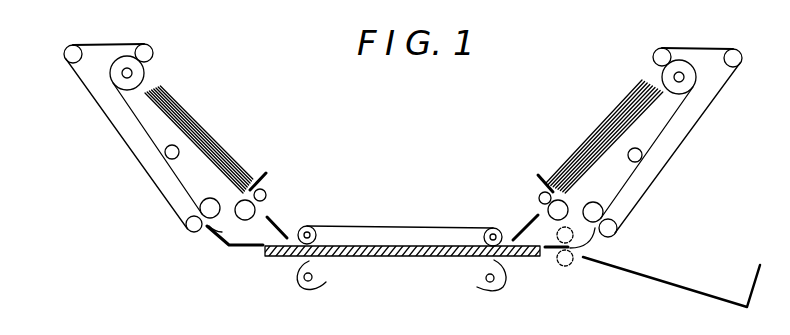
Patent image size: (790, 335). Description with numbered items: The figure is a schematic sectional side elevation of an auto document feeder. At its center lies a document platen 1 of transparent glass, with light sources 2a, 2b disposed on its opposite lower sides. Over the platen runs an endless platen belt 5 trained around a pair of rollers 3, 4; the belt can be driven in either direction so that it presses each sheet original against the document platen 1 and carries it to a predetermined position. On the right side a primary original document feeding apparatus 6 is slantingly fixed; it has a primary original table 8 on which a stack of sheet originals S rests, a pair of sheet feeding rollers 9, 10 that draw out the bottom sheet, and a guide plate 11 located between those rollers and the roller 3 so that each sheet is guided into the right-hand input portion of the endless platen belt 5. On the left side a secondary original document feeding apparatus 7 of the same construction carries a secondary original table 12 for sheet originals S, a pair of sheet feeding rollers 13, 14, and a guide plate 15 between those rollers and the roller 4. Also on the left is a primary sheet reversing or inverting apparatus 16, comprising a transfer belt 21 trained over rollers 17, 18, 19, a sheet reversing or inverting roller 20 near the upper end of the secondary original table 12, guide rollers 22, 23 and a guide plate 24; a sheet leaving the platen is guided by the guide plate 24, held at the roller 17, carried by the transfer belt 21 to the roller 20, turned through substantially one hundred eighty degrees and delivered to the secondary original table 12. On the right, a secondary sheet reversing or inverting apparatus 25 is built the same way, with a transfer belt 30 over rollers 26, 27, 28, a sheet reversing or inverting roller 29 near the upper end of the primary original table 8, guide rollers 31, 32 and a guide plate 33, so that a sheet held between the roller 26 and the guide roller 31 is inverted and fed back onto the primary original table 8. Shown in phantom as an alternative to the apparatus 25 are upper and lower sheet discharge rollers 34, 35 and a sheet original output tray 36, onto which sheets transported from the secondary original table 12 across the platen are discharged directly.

The document platen 1 is at (398, 257).
The light source 2a is at (479, 287).
The light source 2b is at (327, 284).
The roller 3 is at (486, 231).
The roller 4 is at (314, 231).
The endless platen belt 5 is at (366, 228).
The primary original document feeding apparatus 6 is at (604, 108).
The secondary original document feeding apparatus 7 is at (246, 159).
The primary original table 8 is at (608, 145).
The sheet feeding roller 9 is at (545, 206).
The sheet feeding roller 10 is at (549, 204).
The guide plate 11 is at (522, 230).
The secondary original table 12 is at (211, 198).
The sheet feeding roller 13 is at (255, 207).
The sheet feeding roller 14 is at (265, 191).
The guide plate 15 is at (283, 231).
The primary sheet reversing or inverting apparatus 16 is at (135, 169).
The roller 17 is at (193, 233).
The roller 18 is at (67, 61).
The roller 19 is at (151, 50).
The sheet reversing or inverting roller 20 is at (144, 73).
The transfer belt 21 is at (156, 194).
The guide roller 22 is at (216, 229).
The guide roller 23 is at (180, 153).
The guide plate 24 is at (226, 247).
The secondary sheet reversing or inverting apparatus 25 is at (661, 173).
The roller 26 is at (618, 229).
The roller 27 is at (741, 60).
The roller 28 is at (654, 59).
The sheet reversing or inverting roller 29 is at (700, 73).
The transfer belt 30 is at (703, 112).
The guide roller 31 is at (598, 203).
The guide roller 32 is at (634, 149).
The guide plate 33 is at (588, 238).
The sheet discharge roller 34 is at (565, 267).
The sheet discharge roller 35 is at (553, 249).
The sheet original output tray 36 is at (629, 272).
The sheet originals S is at (206, 143).